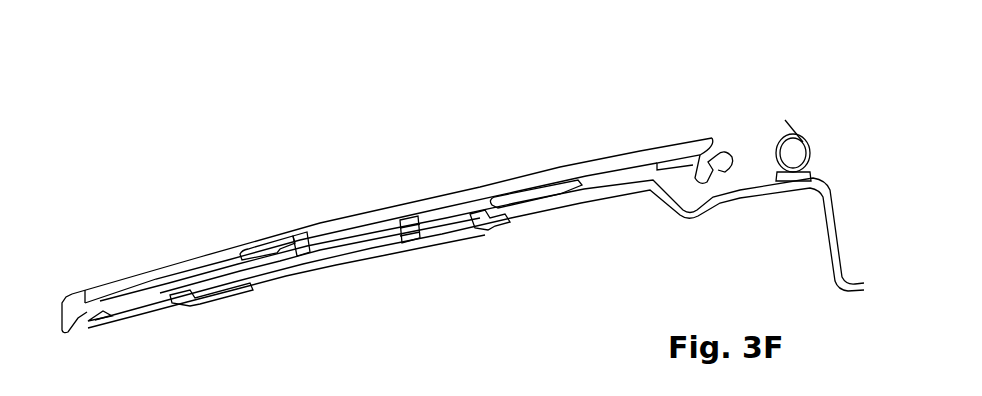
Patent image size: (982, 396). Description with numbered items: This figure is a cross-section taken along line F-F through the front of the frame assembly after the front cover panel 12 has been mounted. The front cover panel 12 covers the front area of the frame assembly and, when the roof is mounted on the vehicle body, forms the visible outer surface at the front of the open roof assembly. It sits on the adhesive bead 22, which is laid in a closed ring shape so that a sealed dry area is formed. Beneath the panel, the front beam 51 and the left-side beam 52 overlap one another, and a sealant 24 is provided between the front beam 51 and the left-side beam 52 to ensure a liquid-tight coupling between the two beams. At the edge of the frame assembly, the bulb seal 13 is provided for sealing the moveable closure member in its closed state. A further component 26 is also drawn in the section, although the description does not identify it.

The front cover panel 12 is at (662, 147).
The bulb seal 13 is at (798, 150).
The adhesive bead 22 is at (242, 260).
The sealant 24 is at (237, 288).
The fastener 26 is at (415, 228).
The front beam 51 is at (297, 257).
The left-side beam 52 is at (605, 200).